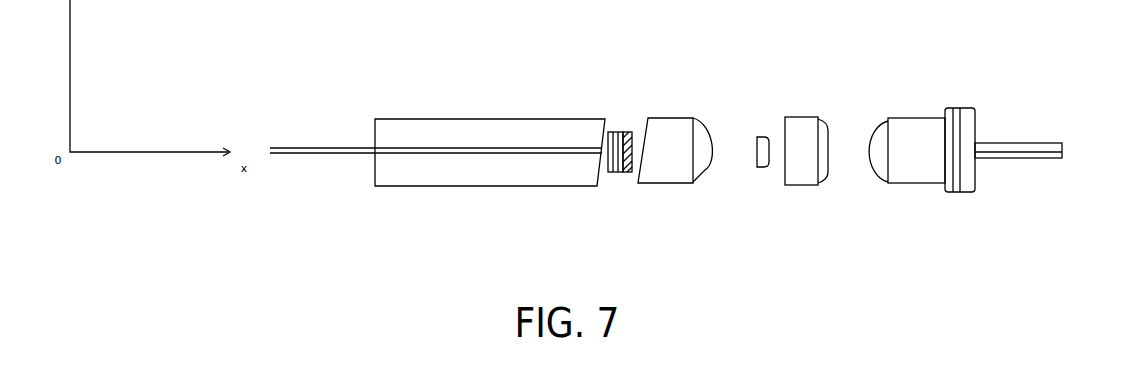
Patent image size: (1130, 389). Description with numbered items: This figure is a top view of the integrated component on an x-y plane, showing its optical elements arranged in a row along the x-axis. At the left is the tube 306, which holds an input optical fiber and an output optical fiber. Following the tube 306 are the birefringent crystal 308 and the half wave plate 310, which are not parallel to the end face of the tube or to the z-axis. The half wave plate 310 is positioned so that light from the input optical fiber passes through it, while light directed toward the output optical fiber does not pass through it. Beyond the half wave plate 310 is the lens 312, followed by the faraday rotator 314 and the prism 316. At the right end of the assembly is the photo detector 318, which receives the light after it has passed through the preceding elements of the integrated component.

The tube 306 is at (502, 175).
The birefringent crystal 308 is at (608, 172).
The half wave plate 310 is at (622, 132).
The lens 312 is at (670, 175).
The faraday rotator 314 is at (763, 162).
The prism 316 is at (802, 178).
The photo detector 318 is at (907, 167).